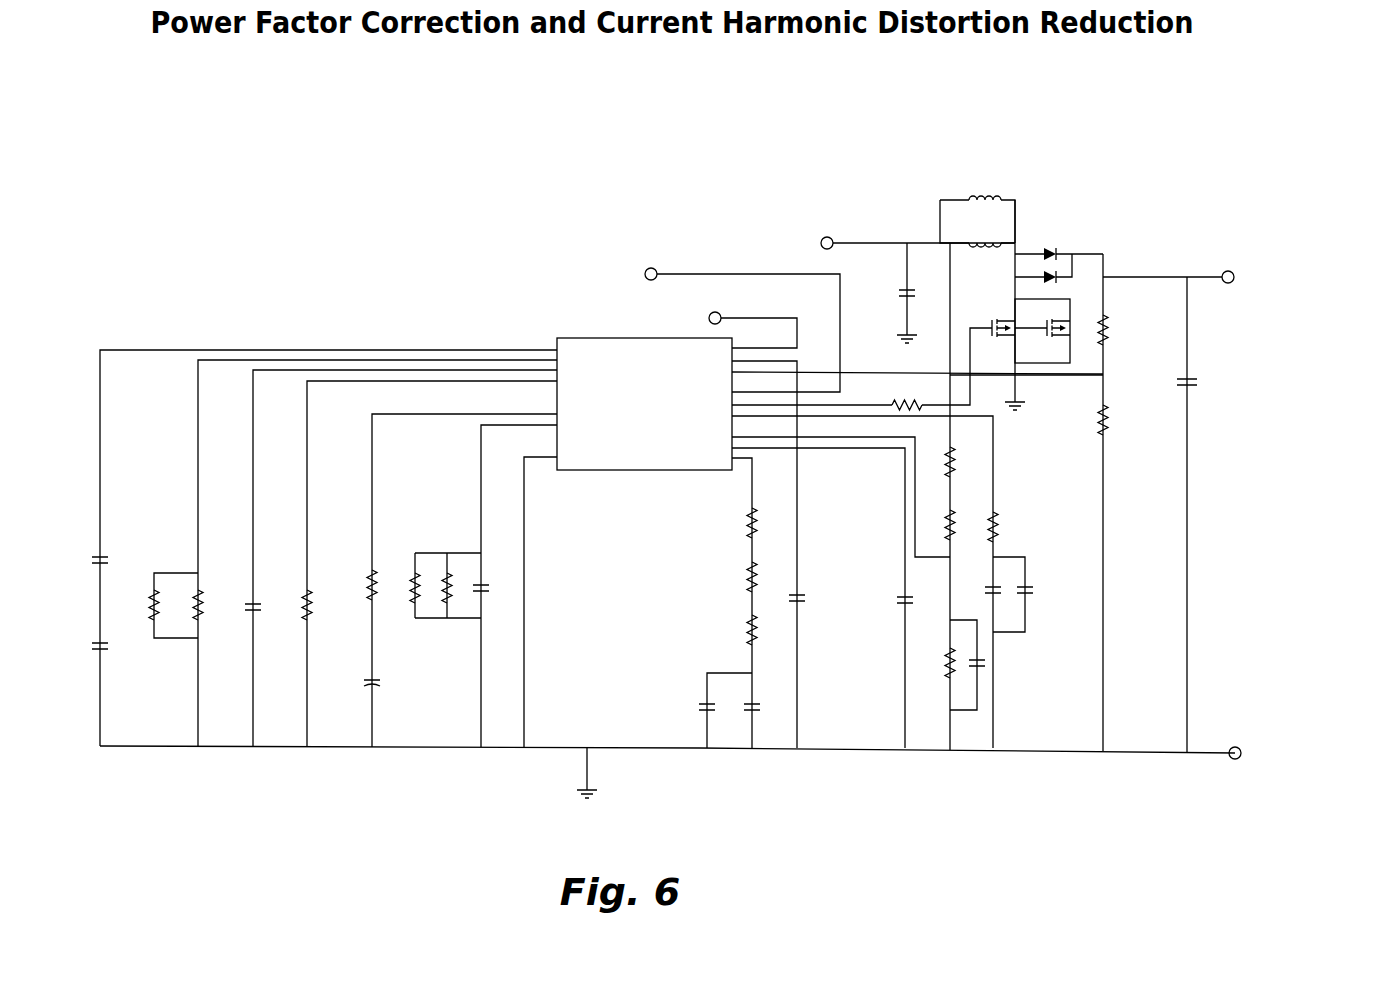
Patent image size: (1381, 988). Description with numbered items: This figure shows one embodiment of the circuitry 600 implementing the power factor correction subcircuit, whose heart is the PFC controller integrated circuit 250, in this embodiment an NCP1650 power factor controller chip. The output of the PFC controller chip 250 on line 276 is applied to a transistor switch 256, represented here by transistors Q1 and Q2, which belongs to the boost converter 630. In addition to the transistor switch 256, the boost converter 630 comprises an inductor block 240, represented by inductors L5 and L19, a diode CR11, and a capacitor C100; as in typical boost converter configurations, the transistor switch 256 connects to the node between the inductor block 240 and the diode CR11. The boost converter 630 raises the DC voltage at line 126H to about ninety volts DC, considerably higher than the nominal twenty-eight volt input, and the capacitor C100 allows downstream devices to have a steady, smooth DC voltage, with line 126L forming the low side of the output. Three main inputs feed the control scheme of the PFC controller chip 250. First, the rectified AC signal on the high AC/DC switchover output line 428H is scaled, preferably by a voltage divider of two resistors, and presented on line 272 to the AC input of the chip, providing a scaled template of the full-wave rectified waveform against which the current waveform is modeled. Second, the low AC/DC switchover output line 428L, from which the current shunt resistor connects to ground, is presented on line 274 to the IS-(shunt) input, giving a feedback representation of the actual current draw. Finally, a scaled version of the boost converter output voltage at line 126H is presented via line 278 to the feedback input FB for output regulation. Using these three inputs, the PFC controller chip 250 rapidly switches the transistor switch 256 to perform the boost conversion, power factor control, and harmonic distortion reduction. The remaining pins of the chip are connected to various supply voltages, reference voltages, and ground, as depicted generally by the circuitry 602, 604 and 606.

The power factor correction circuit 600 is at (1174, 136).
The inductor block 240 is at (909, 174).
The inductor L19 is at (979, 193).
The inductor L5 is at (982, 240).
The boost converter 630 is at (1035, 212).
The high AC/DC switchover output line 428H is at (827, 236).
The low AC/DC switchover output line 428L is at (651, 267).
The line 274 is at (797, 270).
The PFC controller integrated circuit 250 is at (580, 314).
The diode CR11 is at (1072, 252).
The line 126H is at (1229, 265).
The low output terminal 126L is at (1234, 760).
The transistor Q1 is at (1003, 319).
The transistor Q2 is at (1060, 310).
The transistor switch 256 is at (1080, 354).
The capacitor C100 is at (1203, 384).
The line 278 is at (1063, 388).
The line 276 is at (860, 407).
The line 272 is at (817, 440).
The circuitry 606 is at (678, 508).
The circuitry 602 is at (492, 766).
The circuitry 604 is at (890, 766).